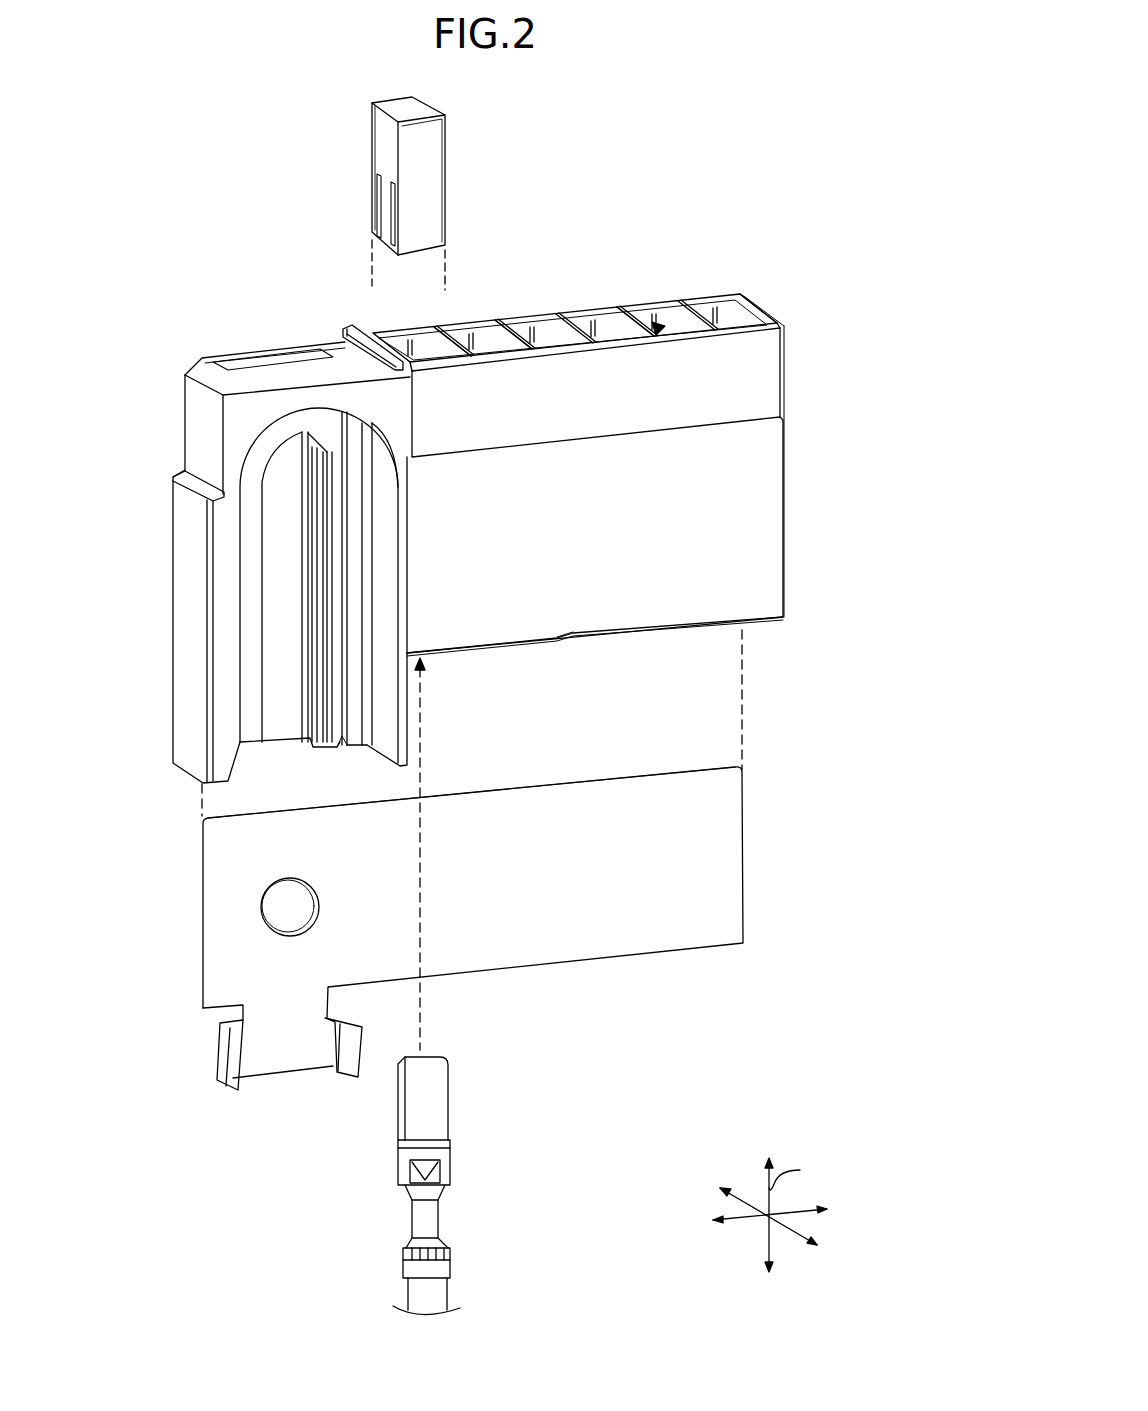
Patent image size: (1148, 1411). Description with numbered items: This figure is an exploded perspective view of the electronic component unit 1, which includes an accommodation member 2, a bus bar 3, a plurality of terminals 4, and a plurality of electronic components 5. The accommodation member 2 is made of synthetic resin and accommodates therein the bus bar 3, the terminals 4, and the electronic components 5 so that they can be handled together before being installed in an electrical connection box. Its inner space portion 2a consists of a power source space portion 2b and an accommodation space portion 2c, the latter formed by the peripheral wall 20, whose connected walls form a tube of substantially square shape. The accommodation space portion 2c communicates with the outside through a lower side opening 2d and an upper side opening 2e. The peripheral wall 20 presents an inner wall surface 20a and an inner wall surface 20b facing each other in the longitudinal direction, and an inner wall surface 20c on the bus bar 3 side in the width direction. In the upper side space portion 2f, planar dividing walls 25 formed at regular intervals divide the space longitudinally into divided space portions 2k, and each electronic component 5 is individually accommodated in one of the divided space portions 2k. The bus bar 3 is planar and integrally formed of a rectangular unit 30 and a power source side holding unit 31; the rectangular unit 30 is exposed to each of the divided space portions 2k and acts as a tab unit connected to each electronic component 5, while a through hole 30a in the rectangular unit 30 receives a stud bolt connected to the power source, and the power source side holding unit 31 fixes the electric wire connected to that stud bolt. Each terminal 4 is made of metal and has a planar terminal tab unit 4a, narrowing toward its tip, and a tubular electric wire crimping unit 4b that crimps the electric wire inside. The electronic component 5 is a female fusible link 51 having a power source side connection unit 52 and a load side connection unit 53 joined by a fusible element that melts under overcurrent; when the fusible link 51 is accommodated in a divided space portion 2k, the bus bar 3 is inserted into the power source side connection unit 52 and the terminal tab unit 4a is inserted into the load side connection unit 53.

The electronic component unit 1 is at (755, 247).
The accommodation member 2 is at (489, 478).
The peripheral wall 20 is at (478, 538).
The inner wall surface 20a is at (750, 304).
The inner wall surface 20b is at (376, 318).
The inner wall surface 20c is at (593, 330).
The inner space portion 2a is at (663, 320).
The power source space portion 2b is at (277, 471).
The accommodation space portion 2c is at (512, 330).
The lower side opening 2d is at (650, 636).
The upper side opening 2e is at (455, 328).
The upper side space portion 2f is at (636, 320).
The divided space portion 2k is at (395, 336).
The dividing wall 25 is at (545, 333).
The bus bar 3 is at (464, 965).
The rectangular unit 30 is at (567, 838).
The through hole 30a is at (288, 907).
The power source side holding unit 31 is at (292, 1052).
The terminal 4 is at (471, 1159).
The terminal tab unit 4a is at (425, 1097).
The electric wire crimping unit 4b is at (435, 1190).
The electronic component 5 is at (406, 185).
The fusible link 51 is at (465, 152).
The power source side connection unit 52 is at (378, 195).
The load side connection unit 53 is at (393, 228).